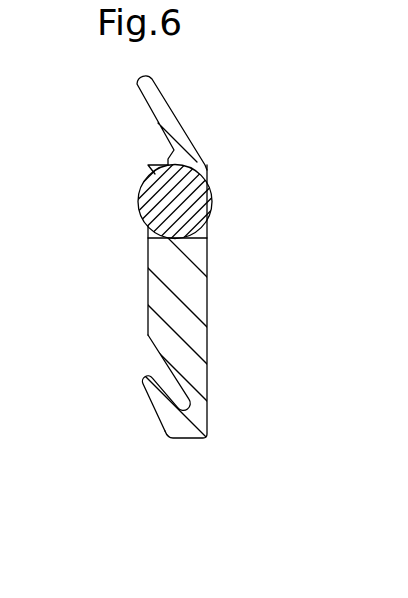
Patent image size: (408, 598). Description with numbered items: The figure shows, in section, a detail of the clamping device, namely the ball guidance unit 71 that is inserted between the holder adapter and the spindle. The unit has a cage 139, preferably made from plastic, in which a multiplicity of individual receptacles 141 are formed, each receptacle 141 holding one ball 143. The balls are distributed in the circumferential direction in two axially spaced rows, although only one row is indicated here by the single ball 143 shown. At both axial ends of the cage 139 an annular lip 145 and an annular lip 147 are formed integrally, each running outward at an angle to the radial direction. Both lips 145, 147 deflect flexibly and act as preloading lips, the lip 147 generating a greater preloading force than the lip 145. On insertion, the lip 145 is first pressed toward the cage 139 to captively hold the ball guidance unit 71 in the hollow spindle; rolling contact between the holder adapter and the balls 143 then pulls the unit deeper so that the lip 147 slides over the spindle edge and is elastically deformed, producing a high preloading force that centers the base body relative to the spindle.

The annular lip 147 is at (167, 101).
The ball 143 is at (183, 197).
The receptacle 141 is at (152, 232).
The cage 139 is at (188, 297).
The ball guidance unit 71 is at (207, 346).
The annular lip 145 is at (159, 417).